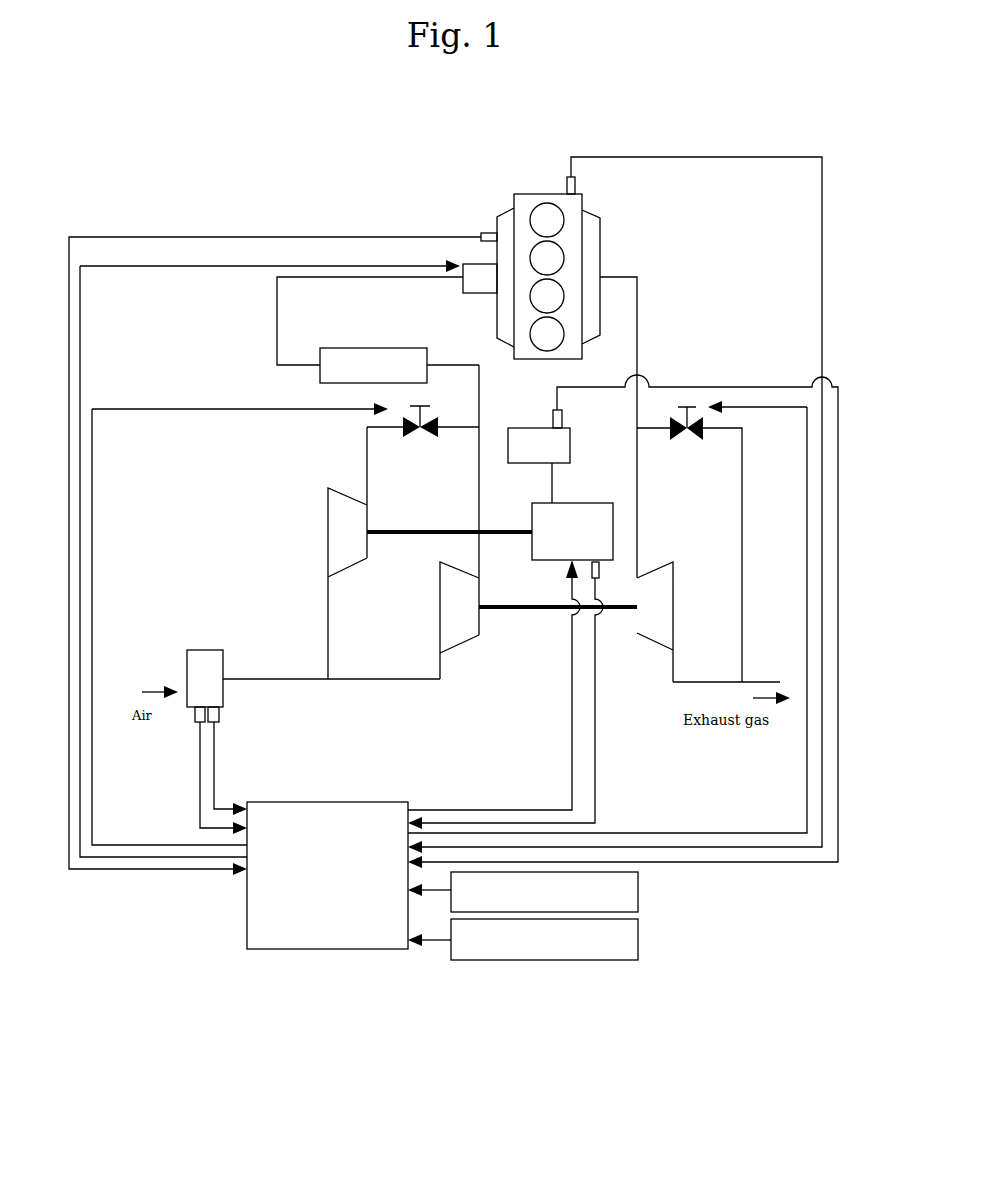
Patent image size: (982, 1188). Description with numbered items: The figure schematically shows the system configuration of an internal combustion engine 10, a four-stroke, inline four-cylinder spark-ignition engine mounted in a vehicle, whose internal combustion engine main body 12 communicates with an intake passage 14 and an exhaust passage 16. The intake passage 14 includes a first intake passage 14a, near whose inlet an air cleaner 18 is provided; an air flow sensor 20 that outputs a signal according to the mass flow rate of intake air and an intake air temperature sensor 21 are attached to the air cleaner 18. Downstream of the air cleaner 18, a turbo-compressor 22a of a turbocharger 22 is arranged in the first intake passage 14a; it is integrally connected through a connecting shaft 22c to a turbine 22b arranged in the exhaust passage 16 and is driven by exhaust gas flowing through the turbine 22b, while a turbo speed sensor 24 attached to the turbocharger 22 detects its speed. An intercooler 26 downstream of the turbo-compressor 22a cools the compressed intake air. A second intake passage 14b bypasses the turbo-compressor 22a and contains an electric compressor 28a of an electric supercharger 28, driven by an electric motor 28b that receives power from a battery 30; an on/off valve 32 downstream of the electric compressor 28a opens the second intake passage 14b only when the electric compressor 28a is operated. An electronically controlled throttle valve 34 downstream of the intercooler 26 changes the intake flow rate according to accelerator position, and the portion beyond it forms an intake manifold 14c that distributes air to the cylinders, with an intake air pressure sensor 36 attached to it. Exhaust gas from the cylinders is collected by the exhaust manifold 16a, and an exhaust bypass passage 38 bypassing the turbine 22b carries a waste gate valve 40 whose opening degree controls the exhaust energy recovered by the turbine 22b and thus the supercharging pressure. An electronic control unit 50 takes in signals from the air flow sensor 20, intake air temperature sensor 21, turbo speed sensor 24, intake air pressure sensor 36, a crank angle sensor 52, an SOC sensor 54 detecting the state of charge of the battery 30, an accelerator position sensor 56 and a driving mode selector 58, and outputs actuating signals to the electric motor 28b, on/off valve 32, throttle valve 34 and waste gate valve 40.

The internal combustion engine 10 is at (700, 275).
The internal combustion engine main body 12 is at (518, 193).
The intake passage 14 is at (360, 471).
The first intake passage 14a is at (370, 680).
The second intake passage 14b is at (367, 462).
The intake manifold 14c is at (497, 218).
The exhaust passage 16 is at (639, 333).
The exhaust manifold 16a is at (600, 230).
The air cleaner 18 is at (187, 670).
The air flow sensor 20 is at (219, 722).
The intake air temperature sensor 21 is at (197, 723).
The turbocharger 22 is at (556, 627).
The turbo-compressor 22a is at (462, 643).
The turbine 22b is at (657, 648).
The connecting shaft 22c is at (522, 622).
The turbo speed sensor 24 is at (600, 572).
The intercooler 26 is at (352, 347).
The electric supercharger 28 is at (441, 633).
The electric compressor 28a is at (328, 526).
The electric motor 28b is at (582, 503).
The battery 30 is at (552, 428).
The on/off valve 32 is at (437, 420).
The throttle valve 34 is at (482, 294).
The intake air pressure sensor 36 is at (482, 232).
The exhaust bypass passage 38 is at (744, 538).
The waste gate valve 40 is at (698, 440).
The electronic control unit 50 is at (325, 950).
The crank angle sensor 52 is at (576, 185).
The SOC sensor 54 is at (562, 422).
The accelerator position sensor 56 is at (638, 892).
The driving mode selector 58 is at (638, 940).